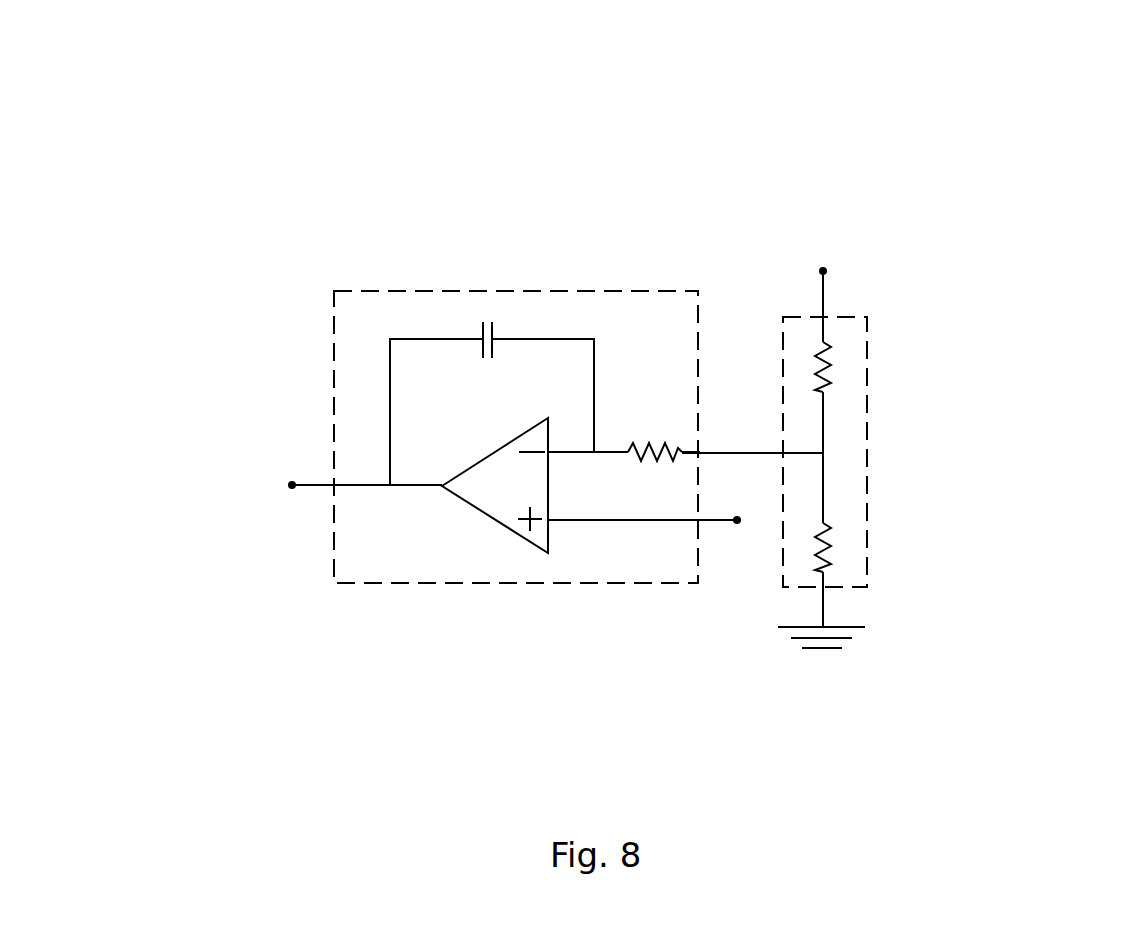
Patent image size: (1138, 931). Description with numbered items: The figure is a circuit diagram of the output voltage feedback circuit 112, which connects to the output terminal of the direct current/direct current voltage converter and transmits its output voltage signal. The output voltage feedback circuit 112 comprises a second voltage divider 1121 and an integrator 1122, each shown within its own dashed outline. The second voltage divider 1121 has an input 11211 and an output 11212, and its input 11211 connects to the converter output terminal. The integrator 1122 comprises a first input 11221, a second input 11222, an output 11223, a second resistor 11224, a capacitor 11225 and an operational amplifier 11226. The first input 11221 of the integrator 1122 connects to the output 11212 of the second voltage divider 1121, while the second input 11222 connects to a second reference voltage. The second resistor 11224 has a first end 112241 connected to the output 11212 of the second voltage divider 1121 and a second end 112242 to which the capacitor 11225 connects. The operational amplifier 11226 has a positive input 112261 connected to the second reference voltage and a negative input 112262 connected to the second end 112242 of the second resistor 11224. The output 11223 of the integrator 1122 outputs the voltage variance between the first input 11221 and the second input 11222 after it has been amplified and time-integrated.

The output voltage feedback circuit 112 is at (932, 138).
The second voltage divider 1121 is at (855, 440).
The integrator 1122 is at (408, 303).
The input 11211 is at (820, 368).
The output 11212 is at (815, 570).
The first input 11221 is at (753, 453).
The second input 11222 is at (713, 527).
The output 11223 is at (313, 485).
The second resistor 11224 is at (648, 450).
The capacitor 11225 is at (488, 322).
The operational amplifier 11226 is at (497, 502).
The first end 112241 is at (688, 450).
The second end 112242 is at (615, 452).
The positive input 112261 is at (587, 522).
The negative input 112262 is at (575, 447).